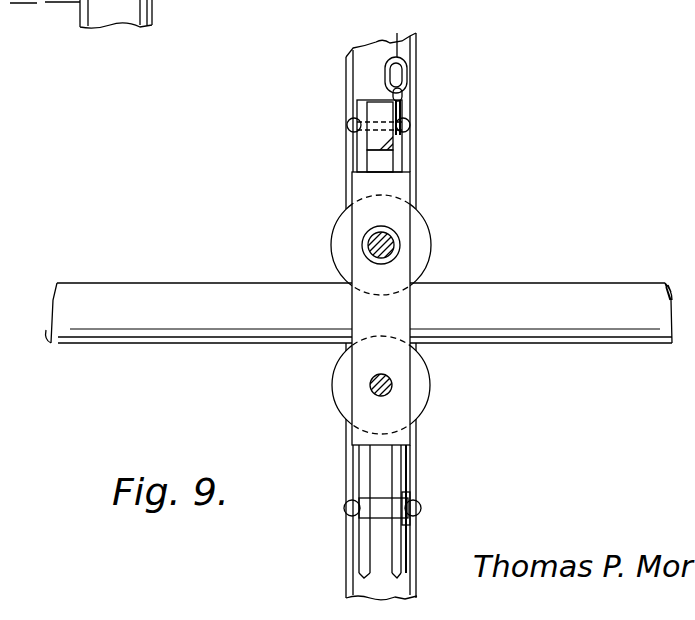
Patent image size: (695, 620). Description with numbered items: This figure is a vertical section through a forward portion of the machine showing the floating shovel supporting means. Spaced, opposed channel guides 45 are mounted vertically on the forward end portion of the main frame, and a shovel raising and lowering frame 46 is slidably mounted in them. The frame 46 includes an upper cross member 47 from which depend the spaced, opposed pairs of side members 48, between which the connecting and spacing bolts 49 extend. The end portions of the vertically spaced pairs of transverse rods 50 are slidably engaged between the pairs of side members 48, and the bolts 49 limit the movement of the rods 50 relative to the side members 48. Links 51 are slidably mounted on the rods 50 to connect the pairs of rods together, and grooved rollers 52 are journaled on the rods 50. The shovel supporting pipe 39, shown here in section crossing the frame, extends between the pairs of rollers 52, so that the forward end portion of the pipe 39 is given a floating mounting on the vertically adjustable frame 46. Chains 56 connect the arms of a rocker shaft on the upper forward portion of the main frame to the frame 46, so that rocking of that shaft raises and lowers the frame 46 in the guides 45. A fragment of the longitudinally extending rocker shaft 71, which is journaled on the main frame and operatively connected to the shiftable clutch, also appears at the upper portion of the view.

The shovel supporting pipe 39 is at (608, 288).
The channel guide 45 is at (415, 472).
The shovel raising and lowering frame 46 is at (372, 95).
The upper cross member 47 is at (383, 142).
The side member 48 is at (400, 540).
The connecting and spacing bolt 49 is at (383, 507).
The transverse rod 50 is at (370, 238).
The link 51 is at (395, 310).
The grooved roller 52 is at (342, 249).
The chain 56 is at (392, 60).
The rocker shaft 71 is at (183, 2).